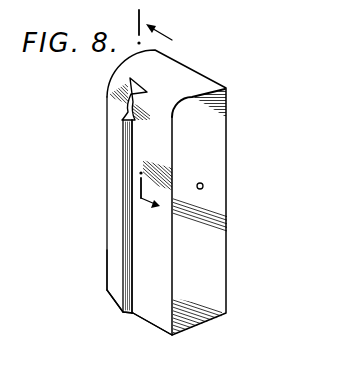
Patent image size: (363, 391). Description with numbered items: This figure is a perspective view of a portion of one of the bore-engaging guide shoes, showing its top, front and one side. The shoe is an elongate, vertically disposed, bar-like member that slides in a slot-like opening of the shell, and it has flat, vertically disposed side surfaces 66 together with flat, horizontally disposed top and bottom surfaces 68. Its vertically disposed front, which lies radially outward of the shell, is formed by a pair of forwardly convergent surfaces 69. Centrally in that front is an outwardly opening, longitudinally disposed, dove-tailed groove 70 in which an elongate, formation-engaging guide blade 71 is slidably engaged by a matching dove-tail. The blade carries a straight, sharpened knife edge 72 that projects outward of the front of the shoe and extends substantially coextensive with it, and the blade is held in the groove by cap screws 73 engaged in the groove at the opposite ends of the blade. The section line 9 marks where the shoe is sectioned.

The section line 9- 9 is at (157, 121).
The side surfaces 66 is at (207, 226).
The top and bottom surfaces 68 is at (177, 78).
The forwardly convergent surfaces 69 is at (112, 258).
The dove-tailed groove 70 is at (130, 88).
The guide blade 71 is at (125, 140).
The knife edge 72 is at (123, 178).
The cap screws 73 is at (126, 108).